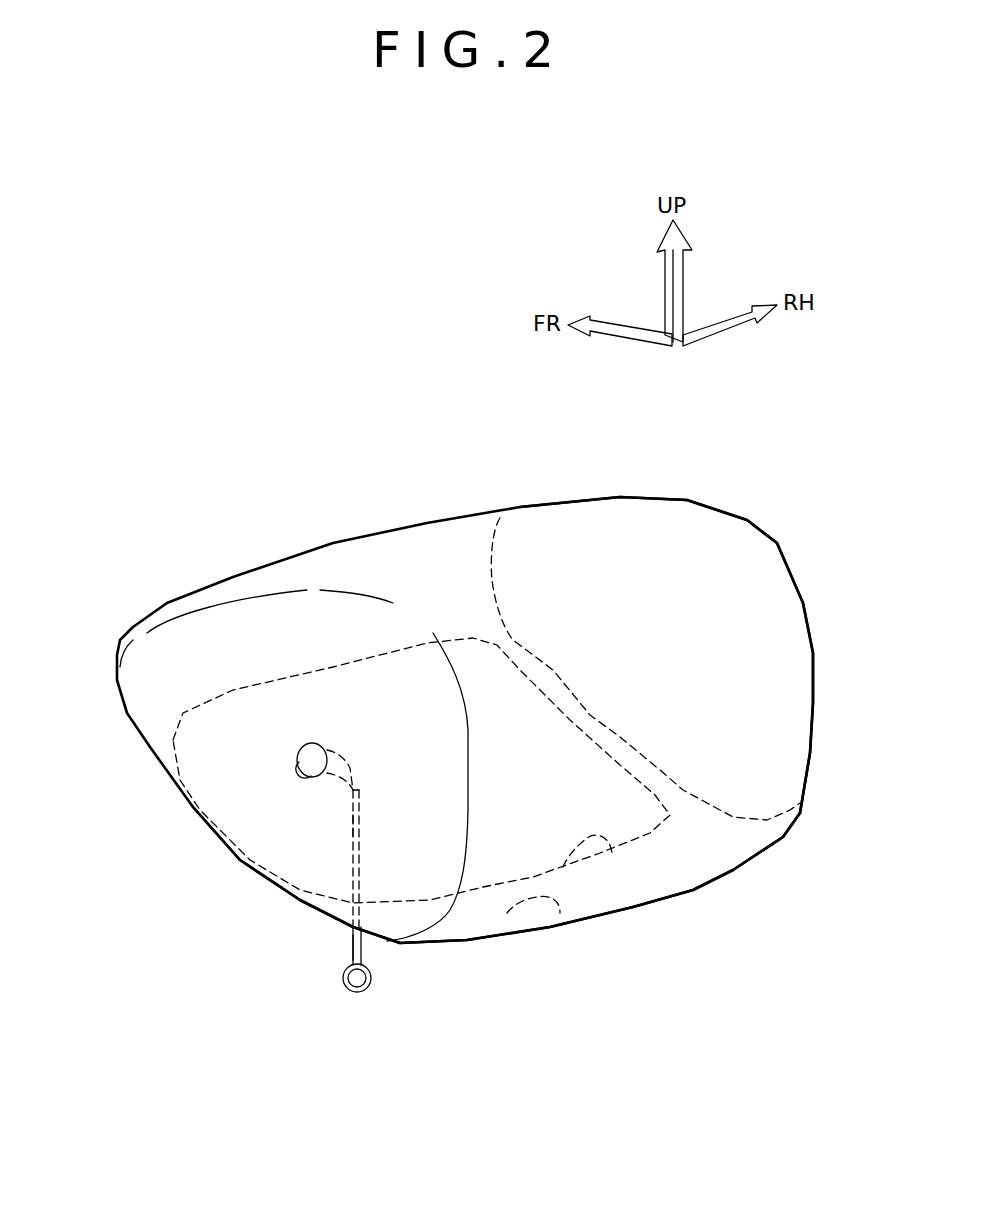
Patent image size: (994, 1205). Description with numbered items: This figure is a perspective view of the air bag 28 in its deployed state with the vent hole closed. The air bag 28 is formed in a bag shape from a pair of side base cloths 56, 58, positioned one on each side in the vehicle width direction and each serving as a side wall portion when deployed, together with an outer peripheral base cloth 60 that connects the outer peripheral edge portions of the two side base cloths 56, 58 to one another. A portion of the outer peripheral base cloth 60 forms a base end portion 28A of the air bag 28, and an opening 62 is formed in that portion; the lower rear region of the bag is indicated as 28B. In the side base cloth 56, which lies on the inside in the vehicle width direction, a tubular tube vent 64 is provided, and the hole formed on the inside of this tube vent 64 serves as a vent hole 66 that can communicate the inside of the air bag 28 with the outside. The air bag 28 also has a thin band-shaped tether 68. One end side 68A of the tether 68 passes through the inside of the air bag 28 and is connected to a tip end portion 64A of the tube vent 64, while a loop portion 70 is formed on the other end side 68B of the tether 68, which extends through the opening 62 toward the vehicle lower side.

The air bag 28 is at (392, 460).
The base end portion 28A is at (560, 913).
The rear lower portion of airbag 28B is at (757, 747).
The side base cloth 56 is at (157, 713).
The side base cloth 58 is at (767, 577).
The outer peripheral base cloth 60 is at (477, 535).
The opening 62 is at (612, 853).
The tube vent 64 is at (347, 753).
The tip end portion 64A is at (357, 797).
The vent hole 66 is at (298, 772).
The tether 68 is at (353, 950).
The one end side 68A is at (357, 827).
The other end side 68B is at (362, 940).
The loop portion 70 is at (355, 992).